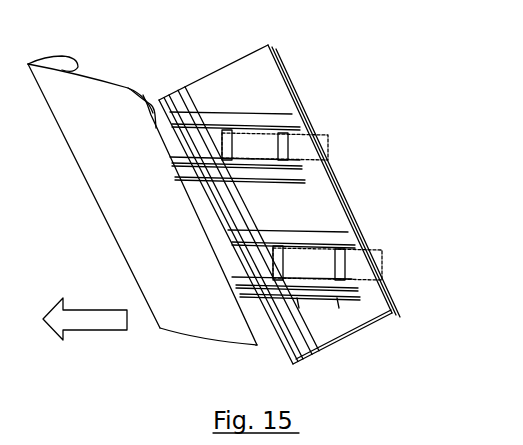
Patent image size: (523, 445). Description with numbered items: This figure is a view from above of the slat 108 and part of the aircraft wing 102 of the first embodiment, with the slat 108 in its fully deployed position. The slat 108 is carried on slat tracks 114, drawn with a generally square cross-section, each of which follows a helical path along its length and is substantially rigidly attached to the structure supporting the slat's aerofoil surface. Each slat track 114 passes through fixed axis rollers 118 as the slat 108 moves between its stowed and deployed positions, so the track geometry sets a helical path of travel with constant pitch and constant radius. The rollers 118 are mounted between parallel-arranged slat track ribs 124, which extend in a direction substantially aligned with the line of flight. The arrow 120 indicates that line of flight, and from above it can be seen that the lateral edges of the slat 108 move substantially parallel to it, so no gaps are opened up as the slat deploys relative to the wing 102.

The aircraft wing 102 is at (257, 80).
The slat 108 is at (100, 172).
The slat track 114 is at (158, 128).
The fixed axis rollers 118 is at (343, 267).
The arrow 120 is at (106, 320).
The slat track ribs 124 is at (310, 236).